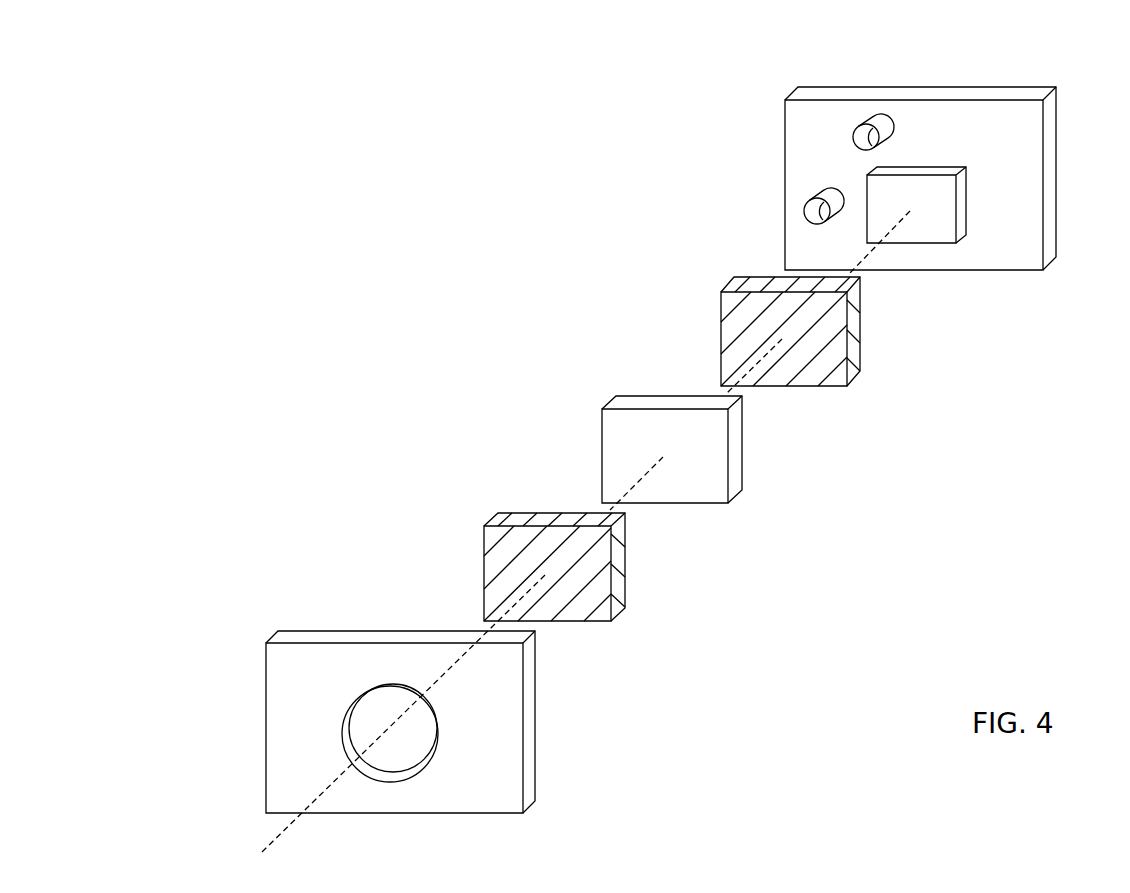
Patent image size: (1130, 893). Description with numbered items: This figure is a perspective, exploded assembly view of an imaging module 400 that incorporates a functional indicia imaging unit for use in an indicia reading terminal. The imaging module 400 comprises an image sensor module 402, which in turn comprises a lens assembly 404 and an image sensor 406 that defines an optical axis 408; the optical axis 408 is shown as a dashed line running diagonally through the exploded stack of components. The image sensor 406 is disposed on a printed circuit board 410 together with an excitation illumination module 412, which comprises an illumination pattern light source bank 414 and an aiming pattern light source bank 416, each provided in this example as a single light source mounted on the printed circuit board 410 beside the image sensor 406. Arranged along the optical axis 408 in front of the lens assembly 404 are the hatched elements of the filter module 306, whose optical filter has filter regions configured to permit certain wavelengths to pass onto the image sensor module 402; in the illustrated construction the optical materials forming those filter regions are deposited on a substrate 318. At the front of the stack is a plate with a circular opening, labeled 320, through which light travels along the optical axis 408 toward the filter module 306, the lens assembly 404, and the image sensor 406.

The imaging module 400 is at (437, 133).
The image sensor module 402 is at (855, 233).
The lens assembly 404 is at (602, 448).
The image sensor 406 is at (950, 235).
The optical axis 408 is at (278, 836).
The printed circuit board 410 is at (1045, 87).
The excitation illumination module 412 is at (846, 138).
The illumination pattern light source bank 414 is at (824, 194).
The aiming pattern light source bank 416 is at (870, 122).
The filter module 306 is at (627, 617).
The substrate 318 is at (627, 592).
The housing 320 is at (533, 803).